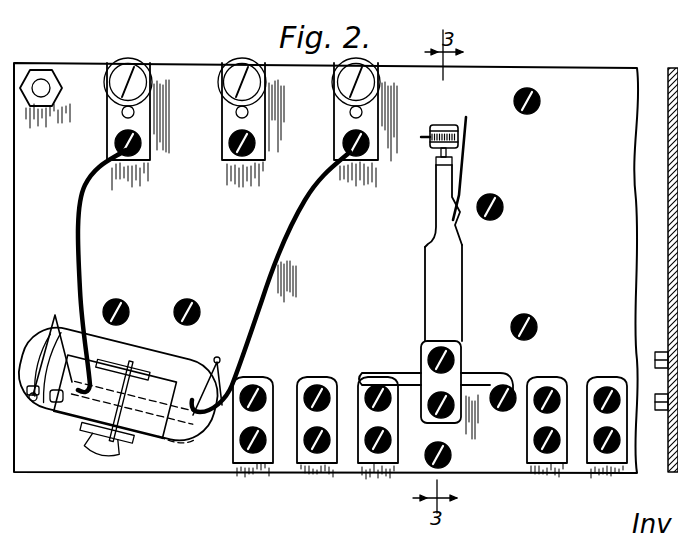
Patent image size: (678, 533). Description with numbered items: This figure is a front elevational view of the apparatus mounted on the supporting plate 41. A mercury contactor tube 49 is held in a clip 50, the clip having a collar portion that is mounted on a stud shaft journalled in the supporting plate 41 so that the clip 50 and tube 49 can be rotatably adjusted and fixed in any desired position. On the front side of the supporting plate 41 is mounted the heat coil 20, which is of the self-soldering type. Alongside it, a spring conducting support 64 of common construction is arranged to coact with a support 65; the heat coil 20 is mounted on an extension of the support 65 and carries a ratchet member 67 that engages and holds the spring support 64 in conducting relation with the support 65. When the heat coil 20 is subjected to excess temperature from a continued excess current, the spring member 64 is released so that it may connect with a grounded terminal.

The supporting plate 41 is at (507, 72).
The heat coil 20 is at (430, 122).
The ratchet member 67 is at (421, 137).
The support 65 is at (436, 199).
The spring conducting support 64 is at (458, 238).
The clip 50 is at (131, 356).
The mercury contactor tube 49 is at (119, 395).